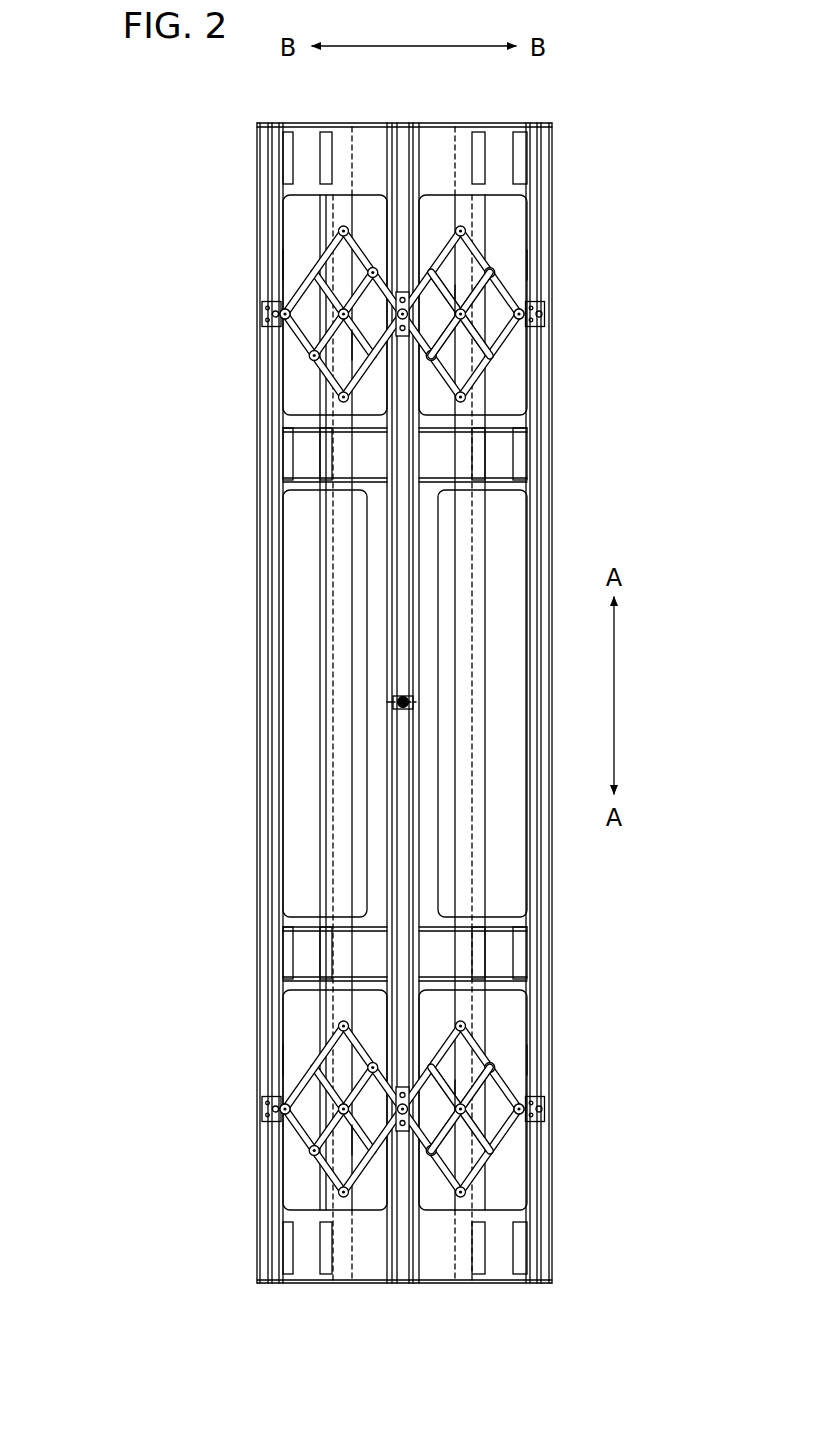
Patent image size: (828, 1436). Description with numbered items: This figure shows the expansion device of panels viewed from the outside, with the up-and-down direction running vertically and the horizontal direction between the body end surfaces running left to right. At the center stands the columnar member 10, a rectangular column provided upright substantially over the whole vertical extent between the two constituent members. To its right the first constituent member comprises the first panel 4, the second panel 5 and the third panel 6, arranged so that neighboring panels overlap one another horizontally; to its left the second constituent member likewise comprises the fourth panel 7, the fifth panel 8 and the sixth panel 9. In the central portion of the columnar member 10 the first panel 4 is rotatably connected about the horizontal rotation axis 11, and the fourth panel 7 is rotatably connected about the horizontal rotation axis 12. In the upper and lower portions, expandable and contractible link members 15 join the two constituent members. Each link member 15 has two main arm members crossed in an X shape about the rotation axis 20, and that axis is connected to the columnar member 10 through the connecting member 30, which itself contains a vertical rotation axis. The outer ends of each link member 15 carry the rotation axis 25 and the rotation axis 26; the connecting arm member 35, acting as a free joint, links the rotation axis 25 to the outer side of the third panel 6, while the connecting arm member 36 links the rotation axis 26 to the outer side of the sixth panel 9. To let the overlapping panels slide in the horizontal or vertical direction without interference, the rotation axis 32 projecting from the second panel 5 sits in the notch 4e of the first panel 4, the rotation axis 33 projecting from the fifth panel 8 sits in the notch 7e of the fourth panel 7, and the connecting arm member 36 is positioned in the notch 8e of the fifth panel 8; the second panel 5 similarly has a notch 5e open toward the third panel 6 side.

The first panel 4 is at (441, 152).
The second panel 5 is at (500, 148).
The third panel 6 is at (508, 228).
The fourth panel 7 is at (357, 152).
The fifth panel 8 is at (301, 150).
The sixth panel 9 is at (300, 222).
The columnar member 10 is at (400, 145).
The rotation axis 11 is at (413, 702).
The rotation axis 12 is at (393, 702).
The link member 15 is at (496, 379).
The rotation axis 20 is at (444, 368).
The rotation axis 25 is at (529, 330).
The rotation axis 26 is at (272, 328).
The connecting member 30 is at (406, 296).
The rotation axis 32 is at (466, 318).
The rotation axis 33 is at (338, 312).
The connecting arm member 35 is at (540, 333).
The connecting arm member 36 is at (276, 314).
The notch 4e is at (450, 300).
The notch 5e is at (519, 264).
The notch 7e is at (364, 342).
The notch 8e is at (291, 263).